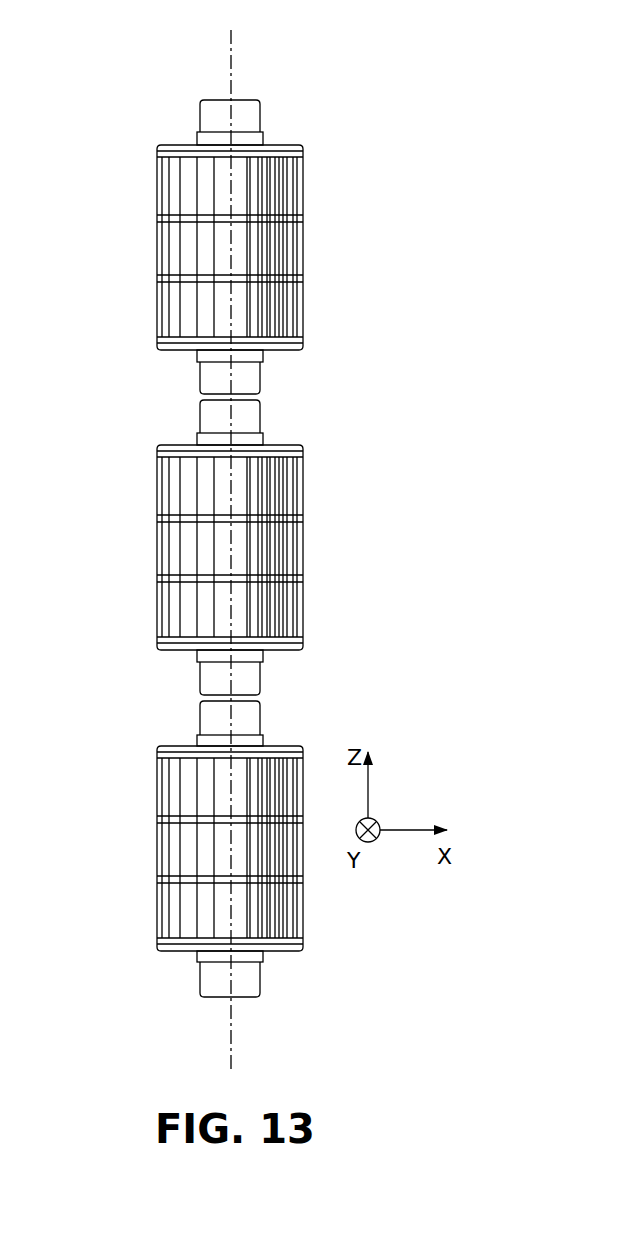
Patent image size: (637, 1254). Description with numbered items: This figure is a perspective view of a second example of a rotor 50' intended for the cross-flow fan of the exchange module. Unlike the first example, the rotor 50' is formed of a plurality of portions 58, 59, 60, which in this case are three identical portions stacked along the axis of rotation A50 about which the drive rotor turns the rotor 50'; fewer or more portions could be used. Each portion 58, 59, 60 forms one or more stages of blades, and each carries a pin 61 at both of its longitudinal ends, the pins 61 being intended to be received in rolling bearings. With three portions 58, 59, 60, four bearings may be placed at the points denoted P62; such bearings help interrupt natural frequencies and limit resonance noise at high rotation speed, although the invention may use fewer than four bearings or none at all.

The rotor 50' is at (272, 547).
The axis of rotation A50 is at (232, 57).
The portion 58 is at (157, 243).
The portion 59 is at (157, 545).
The portion 60 is at (157, 862).
The pin 61 is at (212, 118).
The bearing points P62 is at (250, 122).